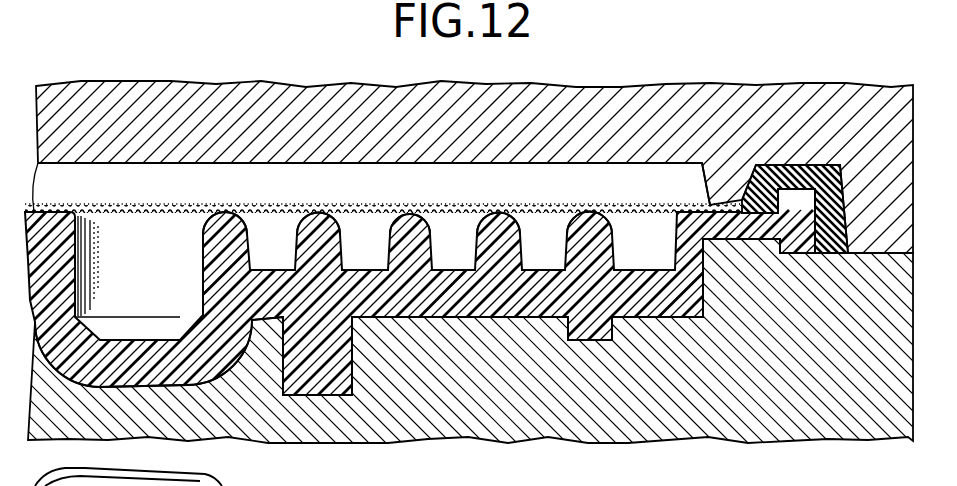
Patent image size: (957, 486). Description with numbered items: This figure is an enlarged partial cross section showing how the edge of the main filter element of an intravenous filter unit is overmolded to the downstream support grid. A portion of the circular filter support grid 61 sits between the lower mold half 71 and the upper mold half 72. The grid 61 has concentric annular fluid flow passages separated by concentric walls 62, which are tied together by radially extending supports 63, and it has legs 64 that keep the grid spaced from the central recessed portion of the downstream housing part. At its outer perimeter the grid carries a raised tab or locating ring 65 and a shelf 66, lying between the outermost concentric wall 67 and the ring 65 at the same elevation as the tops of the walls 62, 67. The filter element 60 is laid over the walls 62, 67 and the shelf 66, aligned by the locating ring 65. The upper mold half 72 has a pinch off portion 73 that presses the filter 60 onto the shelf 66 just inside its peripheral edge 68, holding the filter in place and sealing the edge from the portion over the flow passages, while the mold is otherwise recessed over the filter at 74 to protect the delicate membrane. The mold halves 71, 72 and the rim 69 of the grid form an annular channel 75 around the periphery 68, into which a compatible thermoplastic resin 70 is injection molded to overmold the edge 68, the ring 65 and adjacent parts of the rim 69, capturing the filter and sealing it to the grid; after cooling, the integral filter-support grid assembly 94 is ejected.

The filter element 60 is at (178, 210).
The filter support grid 61 is at (413, 293).
The concentric walls 62 is at (306, 240).
The radially extending supports 63 is at (542, 275).
The legs 64 is at (322, 397).
The raised tab or locating ring 65 is at (816, 186).
The shelf 66 is at (737, 241).
The outermost concentric wall 67 is at (680, 219).
The peripheral edge 68 is at (790, 212).
The rim 69 is at (762, 252).
The thermoplastic resin 70 is at (830, 255).
The lower mold half 71 is at (814, 414).
The upper mold half 72 is at (633, 115).
The pinch off portion 73 is at (713, 185).
The recess 74 is at (493, 168).
The annular channel 75 is at (788, 155).
The integral filter-support grid assembly 94 is at (350, 196).